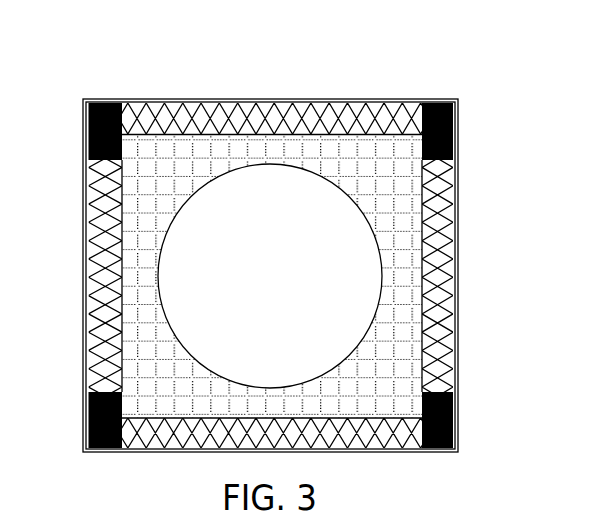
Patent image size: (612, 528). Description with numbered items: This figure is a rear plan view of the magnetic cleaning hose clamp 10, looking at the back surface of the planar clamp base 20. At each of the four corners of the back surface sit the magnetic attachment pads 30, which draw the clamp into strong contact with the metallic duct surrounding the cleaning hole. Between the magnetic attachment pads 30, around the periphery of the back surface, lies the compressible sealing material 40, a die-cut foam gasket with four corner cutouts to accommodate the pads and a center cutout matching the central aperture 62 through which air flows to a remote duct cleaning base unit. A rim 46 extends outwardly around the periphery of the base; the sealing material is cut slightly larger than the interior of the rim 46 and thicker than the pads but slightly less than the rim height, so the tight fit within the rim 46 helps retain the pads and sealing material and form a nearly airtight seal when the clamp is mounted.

The magnetic cleaning hose clamp 10 is at (287, 245).
The planar clamp base 20 is at (134, 219).
The magnetic attachment pads 30 is at (453, 429).
The compressible sealing material 40 is at (413, 331).
The rim 46 is at (455, 376).
The central aperture 62 is at (280, 187).